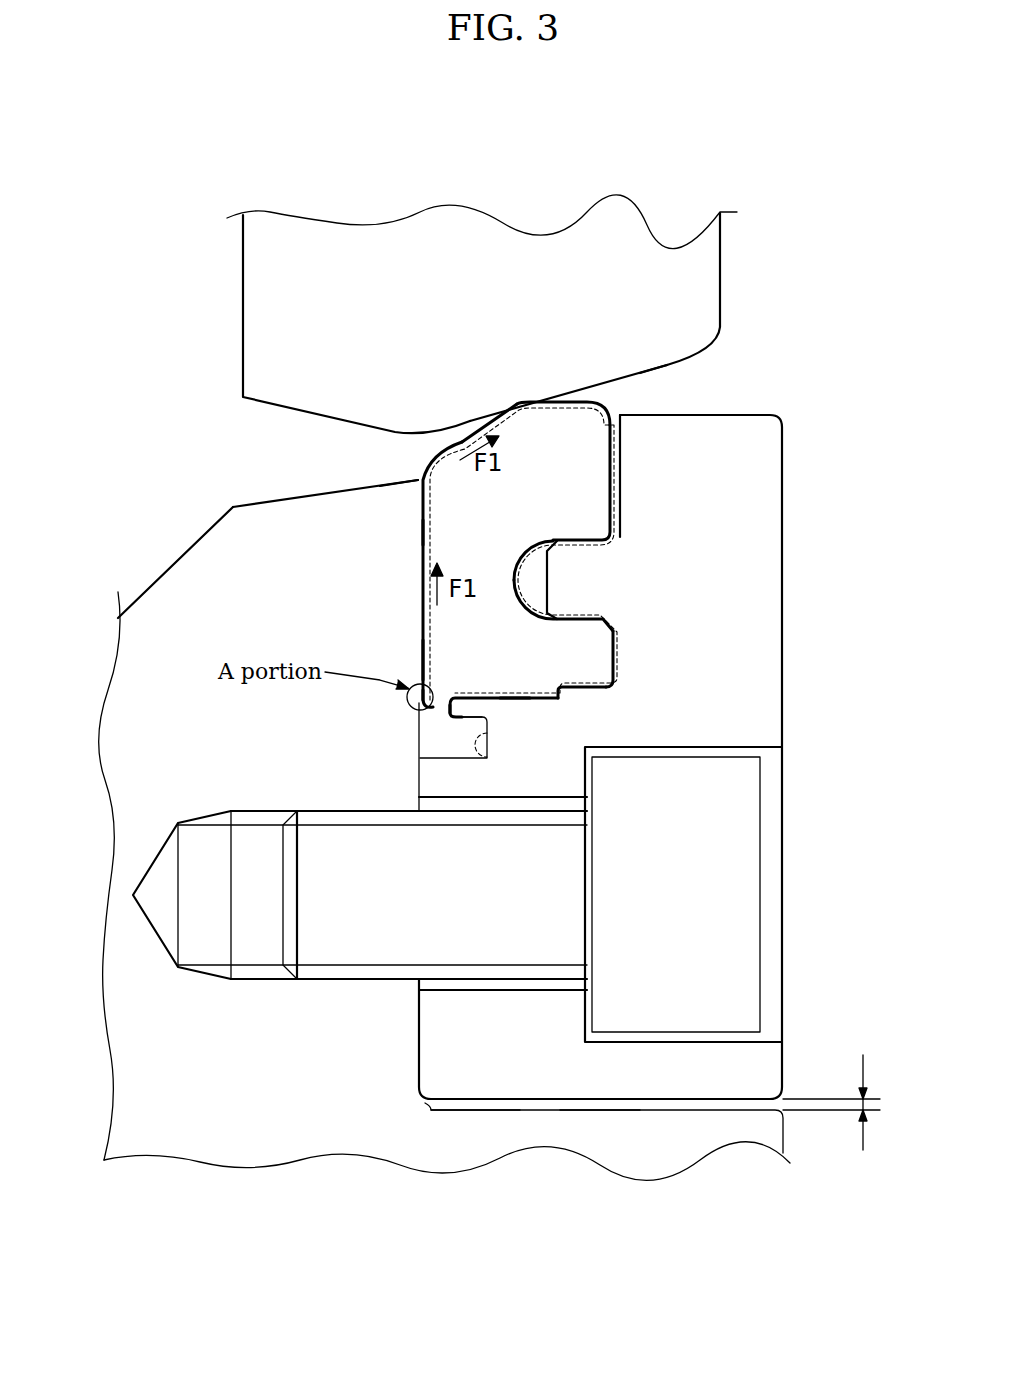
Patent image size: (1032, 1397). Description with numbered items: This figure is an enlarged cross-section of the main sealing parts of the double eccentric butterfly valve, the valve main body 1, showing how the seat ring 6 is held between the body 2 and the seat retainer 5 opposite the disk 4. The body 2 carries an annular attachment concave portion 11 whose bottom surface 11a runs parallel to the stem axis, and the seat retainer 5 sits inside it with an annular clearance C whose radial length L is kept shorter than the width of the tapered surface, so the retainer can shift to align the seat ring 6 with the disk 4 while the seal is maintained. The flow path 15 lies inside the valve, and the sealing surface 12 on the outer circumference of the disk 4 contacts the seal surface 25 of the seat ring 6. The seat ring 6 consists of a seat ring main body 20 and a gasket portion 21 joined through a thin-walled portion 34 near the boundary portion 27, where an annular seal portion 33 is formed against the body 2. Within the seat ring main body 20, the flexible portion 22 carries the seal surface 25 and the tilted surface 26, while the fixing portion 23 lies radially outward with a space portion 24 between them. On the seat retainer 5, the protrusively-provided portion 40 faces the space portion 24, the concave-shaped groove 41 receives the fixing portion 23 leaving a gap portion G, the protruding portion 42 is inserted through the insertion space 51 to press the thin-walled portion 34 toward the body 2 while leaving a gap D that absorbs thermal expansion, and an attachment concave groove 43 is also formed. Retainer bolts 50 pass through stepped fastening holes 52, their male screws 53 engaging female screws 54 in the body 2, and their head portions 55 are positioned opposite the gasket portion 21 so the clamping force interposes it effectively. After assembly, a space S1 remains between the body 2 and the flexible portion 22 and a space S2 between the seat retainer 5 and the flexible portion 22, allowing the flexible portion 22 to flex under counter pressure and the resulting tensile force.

The valve main body 1 is at (250, 1168).
The body 2 is at (175, 1045).
The disk 4 is at (273, 288).
The seat retainer 5 is at (720, 472).
The seat ring 6 is at (462, 533).
The attachment concave portion 11 is at (680, 1107).
The bottom surface 11a is at (420, 1070).
The sealing surface 12 is at (633, 387).
The flow path 15 is at (260, 500).
The seat ring main body 20 is at (623, 443).
The gasket portion 21 is at (452, 750).
The flexible portion 22 is at (550, 460).
The fixing portion 23 is at (570, 638).
The space portion 24 is at (575, 553).
The seal surface 25 is at (527, 400).
The tilted surface 26 is at (467, 433).
The boundary portion 27 is at (420, 675).
The seal portion 33 is at (407, 698).
The thin-walled portion 34 is at (410, 687).
The protrusively-provided portion 40 is at (580, 580).
The concave-shaped groove 41 is at (592, 667).
The protruding portion 42 is at (448, 706).
The attachment concave groove 43 is at (478, 738).
The retainer bolt 50 is at (363, 917).
The insertion space 51 is at (450, 712).
The fastening hole 52 is at (520, 983).
The male screw 53 is at (390, 972).
The female screw 54 is at (333, 812).
The head portion 55 is at (725, 940).
The space S1 is at (420, 513).
The space S2 is at (640, 452).
The clearance C is at (595, 1103).
The gap D is at (515, 694).
The gap portion G is at (590, 693).
The length L is at (839, 1102).